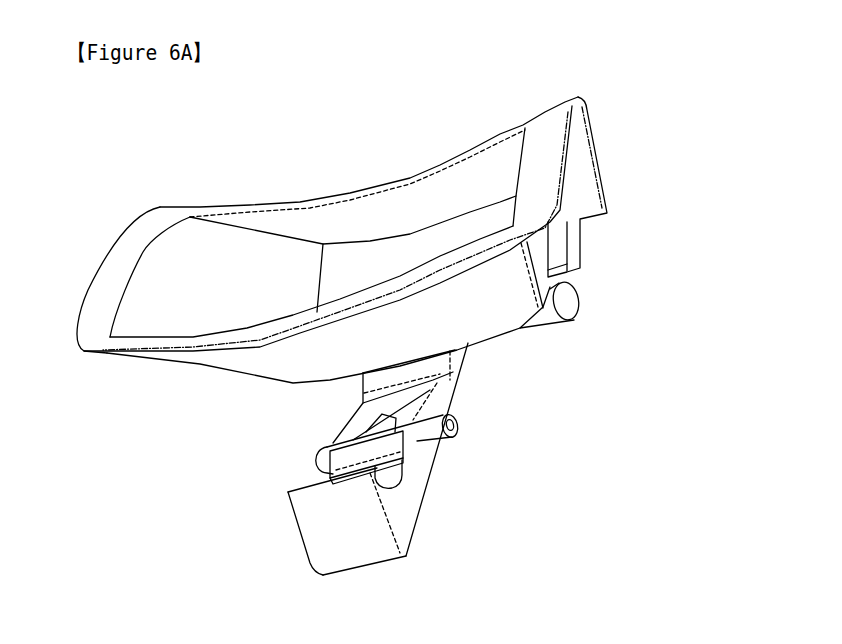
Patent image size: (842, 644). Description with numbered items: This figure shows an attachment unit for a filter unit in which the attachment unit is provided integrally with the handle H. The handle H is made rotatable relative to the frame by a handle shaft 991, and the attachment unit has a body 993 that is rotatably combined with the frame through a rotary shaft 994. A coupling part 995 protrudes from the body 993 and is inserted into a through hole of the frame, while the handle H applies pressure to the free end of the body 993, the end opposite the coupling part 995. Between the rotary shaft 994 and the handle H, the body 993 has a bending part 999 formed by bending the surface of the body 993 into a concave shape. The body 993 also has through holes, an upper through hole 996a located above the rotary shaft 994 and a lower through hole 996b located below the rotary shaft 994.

The handle H is at (396, 178).
The handle shaft 991 is at (580, 297).
The body 993 is at (467, 358).
The bending part 999 is at (422, 379).
The rotary shaft 994 is at (453, 438).
The upper through hole 996a is at (368, 418).
The lower through hole 996b is at (372, 490).
The coupling part 995 is at (305, 517).